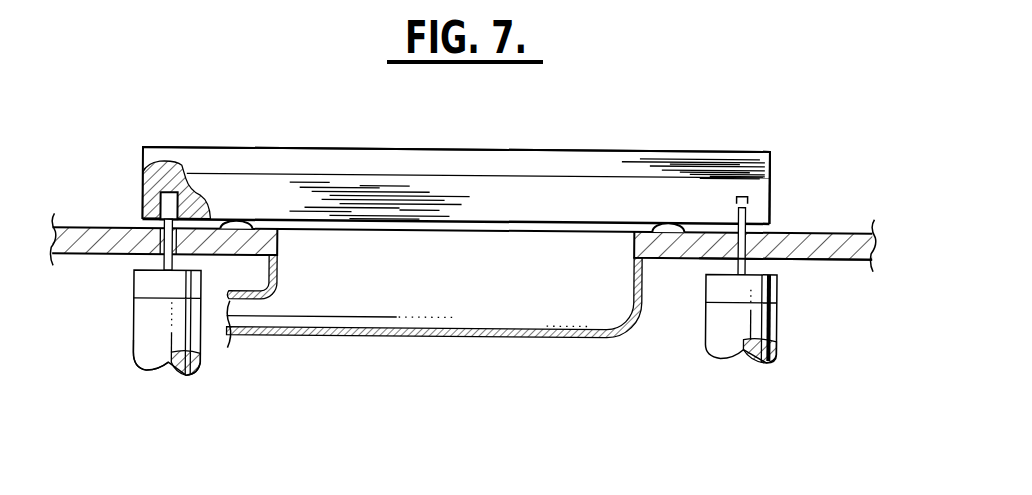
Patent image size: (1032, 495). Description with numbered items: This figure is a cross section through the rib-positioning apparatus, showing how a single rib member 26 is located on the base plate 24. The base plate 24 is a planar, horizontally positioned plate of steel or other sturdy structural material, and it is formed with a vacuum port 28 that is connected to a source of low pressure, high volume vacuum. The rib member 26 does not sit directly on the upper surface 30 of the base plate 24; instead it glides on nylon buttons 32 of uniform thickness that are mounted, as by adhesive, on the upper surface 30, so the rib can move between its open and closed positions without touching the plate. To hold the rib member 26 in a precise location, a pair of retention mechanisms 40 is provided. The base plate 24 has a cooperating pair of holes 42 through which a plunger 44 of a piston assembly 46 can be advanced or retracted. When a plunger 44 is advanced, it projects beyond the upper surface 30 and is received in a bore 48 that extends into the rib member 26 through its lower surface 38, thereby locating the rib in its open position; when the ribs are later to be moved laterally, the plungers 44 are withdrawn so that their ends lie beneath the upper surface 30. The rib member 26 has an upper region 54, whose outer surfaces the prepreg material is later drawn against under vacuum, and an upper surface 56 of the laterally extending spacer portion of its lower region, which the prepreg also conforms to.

The base plate 24 is at (813, 263).
The rib member 26 is at (658, 139).
The vacuum port 28 is at (630, 243).
The upper surface 30 is at (843, 228).
The nylon button 32 is at (242, 218).
The lower surface 38 is at (332, 221).
The retention mechanism 40 is at (130, 322).
The hole 42 is at (142, 254).
The plunger 44 is at (162, 225).
The piston assembly 46 is at (152, 353).
The bore 48 is at (147, 200).
The upper region 54 is at (752, 150).
The upper surface 56 is at (445, 170).